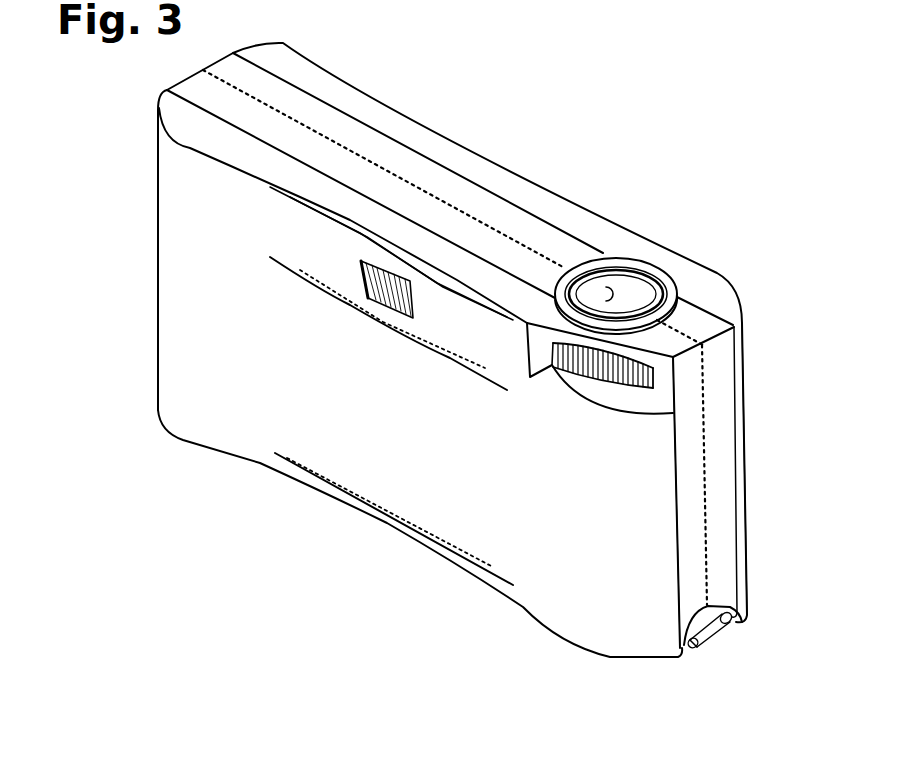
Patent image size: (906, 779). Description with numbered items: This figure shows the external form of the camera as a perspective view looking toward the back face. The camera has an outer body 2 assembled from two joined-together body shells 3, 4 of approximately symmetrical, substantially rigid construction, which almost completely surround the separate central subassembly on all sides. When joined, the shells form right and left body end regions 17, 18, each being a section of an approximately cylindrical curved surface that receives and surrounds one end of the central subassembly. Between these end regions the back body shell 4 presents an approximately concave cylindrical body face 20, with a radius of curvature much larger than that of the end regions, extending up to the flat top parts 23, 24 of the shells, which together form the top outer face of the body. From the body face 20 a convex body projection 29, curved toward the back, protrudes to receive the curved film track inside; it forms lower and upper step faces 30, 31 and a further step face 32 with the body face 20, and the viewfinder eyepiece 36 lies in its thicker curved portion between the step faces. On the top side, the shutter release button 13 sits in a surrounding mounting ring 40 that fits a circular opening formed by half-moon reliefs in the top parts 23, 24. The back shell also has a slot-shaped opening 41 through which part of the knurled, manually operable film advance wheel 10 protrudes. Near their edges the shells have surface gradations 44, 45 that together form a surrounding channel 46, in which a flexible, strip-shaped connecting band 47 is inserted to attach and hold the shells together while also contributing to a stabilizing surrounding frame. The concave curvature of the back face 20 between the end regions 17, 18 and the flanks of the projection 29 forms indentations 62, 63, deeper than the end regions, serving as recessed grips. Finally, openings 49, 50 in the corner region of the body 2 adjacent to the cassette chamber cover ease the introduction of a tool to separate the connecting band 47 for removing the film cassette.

The outer body 2 is at (515, 127).
The front body shell 3 is at (387, 113).
The back body shell 4 is at (248, 430).
The film advance wheel 10 is at (610, 388).
The shutter release button 13 is at (637, 283).
The right body end region 17 is at (610, 607).
The left body end region 18 is at (193, 280).
The back body face 20 is at (498, 520).
The top part of front body shell 23 is at (310, 73).
The top part of back body shell 24 is at (190, 122).
The body projection 29 is at (327, 432).
The lower step face 30 is at (390, 515).
The upper step face 31 is at (437, 357).
The further step face 32 is at (357, 233).
The viewfinder eyepiece 36 is at (360, 280).
The mounting ring 40 is at (677, 287).
The slot-shaped opening 41 is at (570, 377).
The surface gradation of front body shell 44 is at (678, 541).
The surface gradation of back body shell 45 is at (737, 460).
The surrounding channel 46 is at (693, 570).
The connecting band 47 is at (720, 383).
The opening 49 is at (722, 627).
The opening 50 is at (702, 642).
The indentation 62 is at (555, 505).
The indentation 63 is at (213, 393).